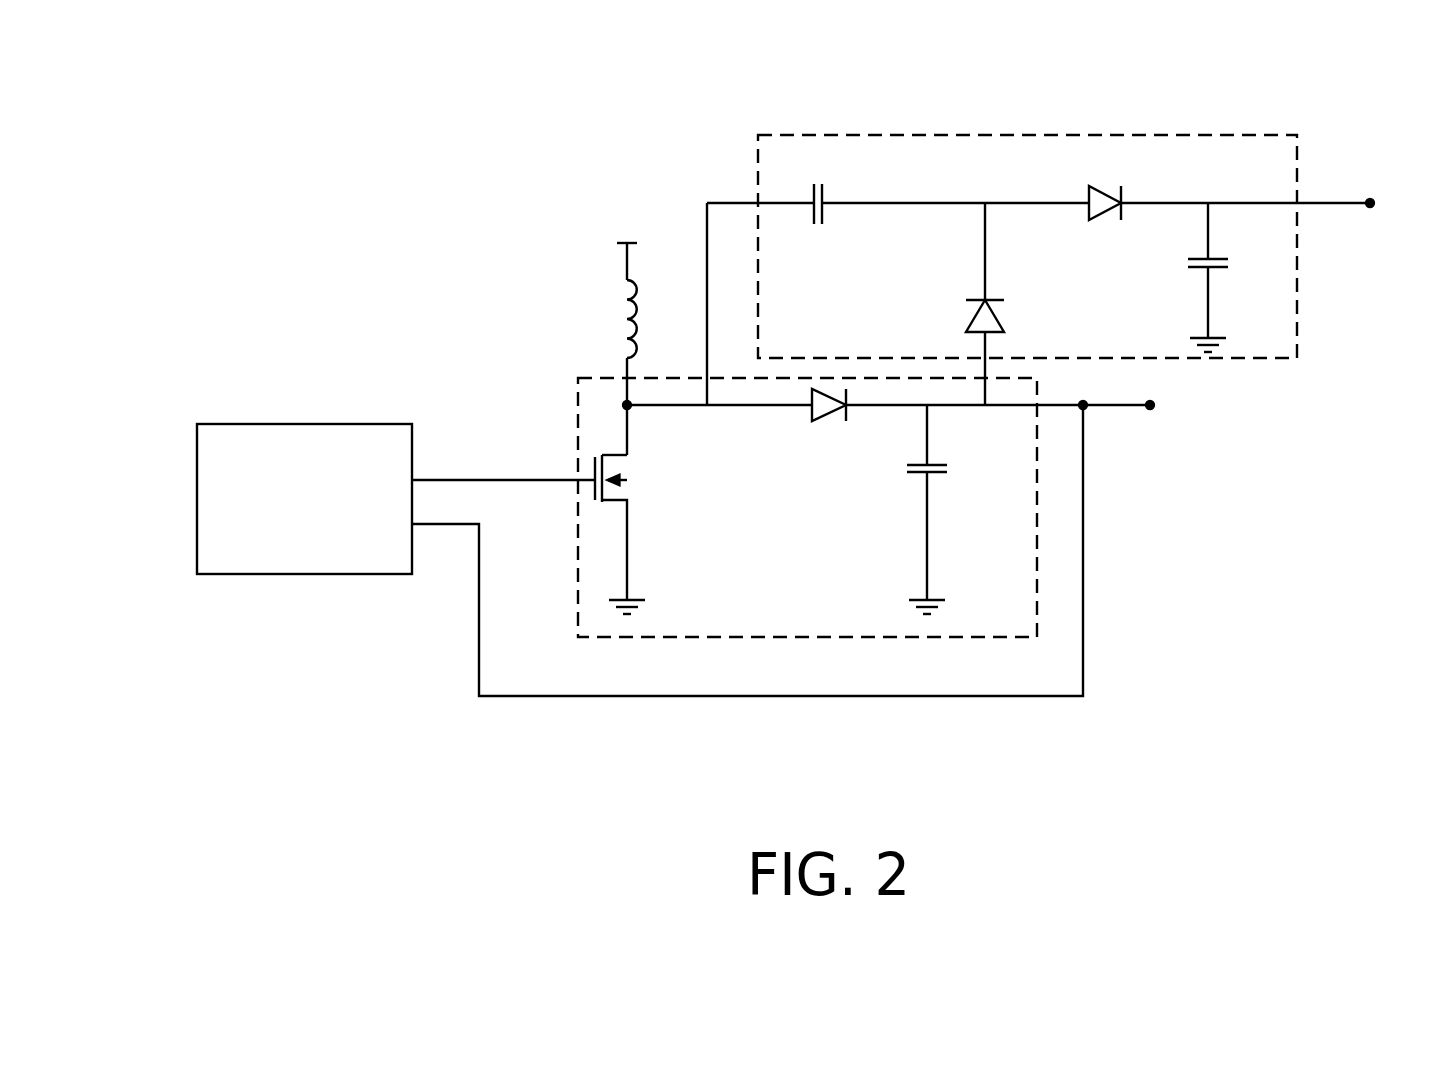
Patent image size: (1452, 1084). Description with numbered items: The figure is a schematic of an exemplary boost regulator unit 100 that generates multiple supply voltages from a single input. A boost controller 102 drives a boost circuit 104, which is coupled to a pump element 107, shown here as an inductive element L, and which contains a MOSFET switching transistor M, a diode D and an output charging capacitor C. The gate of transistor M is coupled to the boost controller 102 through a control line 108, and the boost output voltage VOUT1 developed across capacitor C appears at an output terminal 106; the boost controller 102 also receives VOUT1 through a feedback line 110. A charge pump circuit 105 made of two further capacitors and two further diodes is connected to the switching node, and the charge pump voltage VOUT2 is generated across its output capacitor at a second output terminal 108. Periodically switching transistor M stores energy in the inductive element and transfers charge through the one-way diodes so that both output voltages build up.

The boost regulator unit 100 is at (165, 182).
The boost controller 102 is at (293, 424).
The boost circuit 104 is at (576, 398).
The charge pump circuit 105 is at (757, 178).
The output terminal 106 is at (1130, 407).
The pump element 107 is at (618, 318).
The control line 108 is at (477, 479).
The feedback line 110 is at (449, 527).